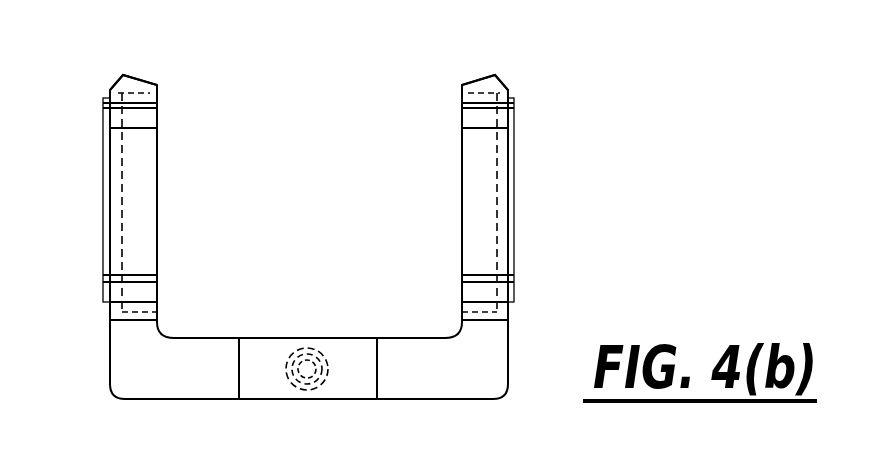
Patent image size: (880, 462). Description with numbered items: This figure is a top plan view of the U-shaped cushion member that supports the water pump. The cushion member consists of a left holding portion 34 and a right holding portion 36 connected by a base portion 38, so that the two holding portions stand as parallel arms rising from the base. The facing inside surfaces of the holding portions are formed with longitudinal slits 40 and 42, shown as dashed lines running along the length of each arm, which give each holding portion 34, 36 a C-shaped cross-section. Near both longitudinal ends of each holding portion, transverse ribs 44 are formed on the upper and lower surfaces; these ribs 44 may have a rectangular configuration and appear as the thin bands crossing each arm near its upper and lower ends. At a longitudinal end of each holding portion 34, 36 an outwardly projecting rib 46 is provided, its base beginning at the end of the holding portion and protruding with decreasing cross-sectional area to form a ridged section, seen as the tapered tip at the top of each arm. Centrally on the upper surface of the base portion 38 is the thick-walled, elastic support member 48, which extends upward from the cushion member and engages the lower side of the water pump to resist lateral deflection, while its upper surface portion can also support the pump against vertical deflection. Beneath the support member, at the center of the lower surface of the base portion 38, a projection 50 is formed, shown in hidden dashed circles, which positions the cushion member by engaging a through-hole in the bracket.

The left holding portion 34 is at (133, 215).
The right holding portion 36 is at (490, 227).
The base portion 38 is at (150, 370).
The longitudinal slit 40 is at (140, 172).
The longitudinal slit 42 is at (474, 178).
The transverse ribs 44 is at (112, 120).
The outwardly projecting rib 46 is at (124, 75).
The elastic support member 48 is at (348, 350).
The projection 50 is at (292, 352).